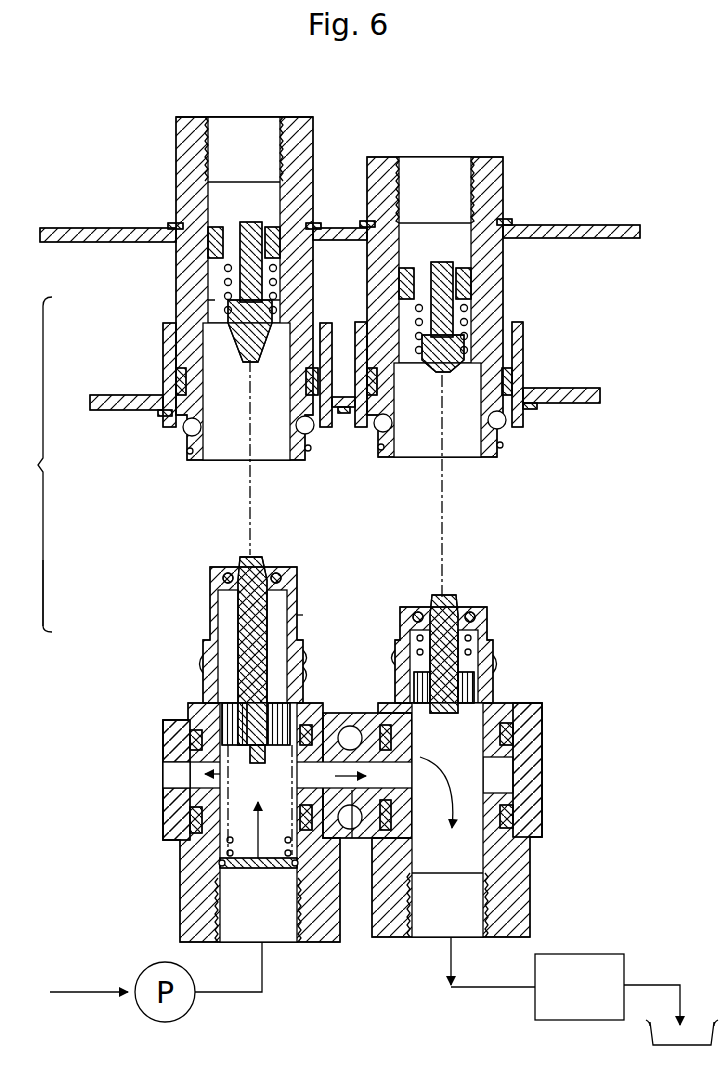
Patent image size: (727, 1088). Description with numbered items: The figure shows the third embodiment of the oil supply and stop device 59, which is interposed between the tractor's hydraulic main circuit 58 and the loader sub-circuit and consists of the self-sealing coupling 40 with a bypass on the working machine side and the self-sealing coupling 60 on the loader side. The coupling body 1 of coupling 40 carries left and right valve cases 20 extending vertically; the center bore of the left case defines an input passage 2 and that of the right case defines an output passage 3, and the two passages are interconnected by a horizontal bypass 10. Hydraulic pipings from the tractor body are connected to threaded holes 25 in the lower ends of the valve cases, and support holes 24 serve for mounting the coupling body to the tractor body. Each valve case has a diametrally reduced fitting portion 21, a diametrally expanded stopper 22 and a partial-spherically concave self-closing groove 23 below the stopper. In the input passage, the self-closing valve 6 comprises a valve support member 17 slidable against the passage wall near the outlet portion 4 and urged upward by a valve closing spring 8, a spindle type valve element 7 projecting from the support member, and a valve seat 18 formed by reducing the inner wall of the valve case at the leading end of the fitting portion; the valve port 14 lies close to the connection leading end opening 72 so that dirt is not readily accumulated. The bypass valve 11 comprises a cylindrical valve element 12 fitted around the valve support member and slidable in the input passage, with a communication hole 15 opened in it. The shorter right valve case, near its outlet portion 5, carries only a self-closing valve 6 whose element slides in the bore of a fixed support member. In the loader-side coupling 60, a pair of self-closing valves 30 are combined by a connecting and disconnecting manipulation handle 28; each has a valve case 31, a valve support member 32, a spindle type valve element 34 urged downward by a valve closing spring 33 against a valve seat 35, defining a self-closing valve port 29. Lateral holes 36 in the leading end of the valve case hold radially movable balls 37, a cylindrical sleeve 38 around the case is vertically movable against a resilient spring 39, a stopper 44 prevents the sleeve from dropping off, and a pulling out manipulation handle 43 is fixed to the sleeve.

The coupling body 1 is at (548, 770).
The input passage 2 is at (280, 930).
The output passage 3 is at (470, 936).
The outlet portion 4 is at (298, 603).
The outlet portion 5 is at (490, 633).
The self-closing valve 6 is at (222, 618).
The valve element 7 is at (243, 558).
The valve closing spring 8 is at (512, 651).
The bypass 10 is at (355, 839).
The bypass valve 11 is at (165, 743).
The cylindrical valve element 12 is at (248, 792).
The valve port 14 is at (290, 583).
The communication hole 15 is at (338, 775).
The valve support member 17 is at (286, 703).
The valve seat 18 is at (214, 578).
The valve case 20 is at (201, 688).
The fitting portion 21 is at (300, 629).
The stopper 22 is at (306, 657).
The self-closing groove 23 is at (302, 669).
The support hole 24 is at (340, 720).
The threaded hole 25 is at (223, 925).
The connecting and disconnecting manipulation handle 28 is at (100, 227).
The self-closing valve port 29 is at (222, 312).
The self-closing valve 30 is at (170, 264).
The valve case 31 is at (304, 272).
The valve support member 32 is at (244, 224).
The valve closing spring 33 is at (402, 308).
The valve element 34 is at (342, 391).
The valve seat 35 is at (260, 322).
The lateral hole 36 is at (203, 421).
The ball 37 is at (185, 436).
The cylindrical sleeve 38 is at (164, 338).
The resilient spring 39 is at (176, 376).
The self-sealing coupling 40 is at (146, 605).
The pulling out manipulation handle 43 is at (121, 411).
The stopper 44 is at (191, 456).
The hydraulic main circuit 58 is at (626, 999).
The oil supply and stop device 59 is at (30, 464).
The self-sealing coupling 60 is at (116, 304).
The opening 72 is at (234, 564).